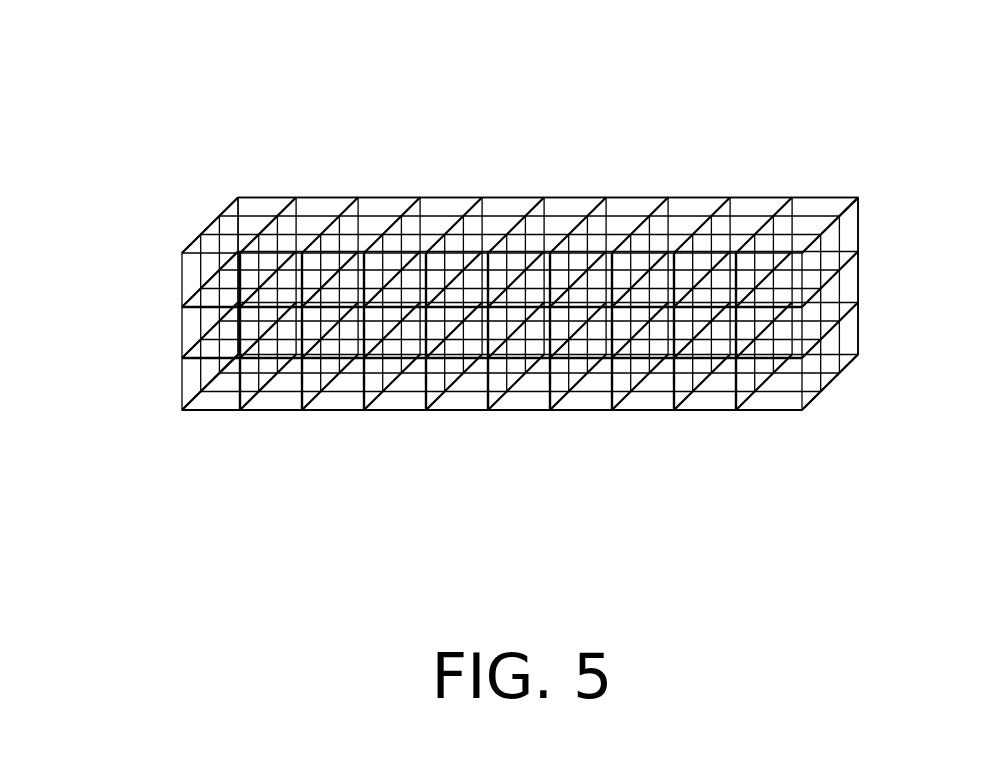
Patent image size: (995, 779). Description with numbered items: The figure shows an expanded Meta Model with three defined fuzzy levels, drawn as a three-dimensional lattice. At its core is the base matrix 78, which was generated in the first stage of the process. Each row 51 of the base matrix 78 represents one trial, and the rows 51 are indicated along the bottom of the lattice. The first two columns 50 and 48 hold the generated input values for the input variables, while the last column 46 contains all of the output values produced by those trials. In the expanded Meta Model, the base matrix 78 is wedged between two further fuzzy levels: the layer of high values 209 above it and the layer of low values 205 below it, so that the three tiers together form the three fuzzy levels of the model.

The last column 46 is at (825, 230).
The second column 48 is at (848, 366).
The first column 50 is at (810, 412).
The row 51 is at (216, 412).
The high values 209 is at (181, 293).
The base matrix 78 is at (181, 340).
The low values 205 is at (181, 388).